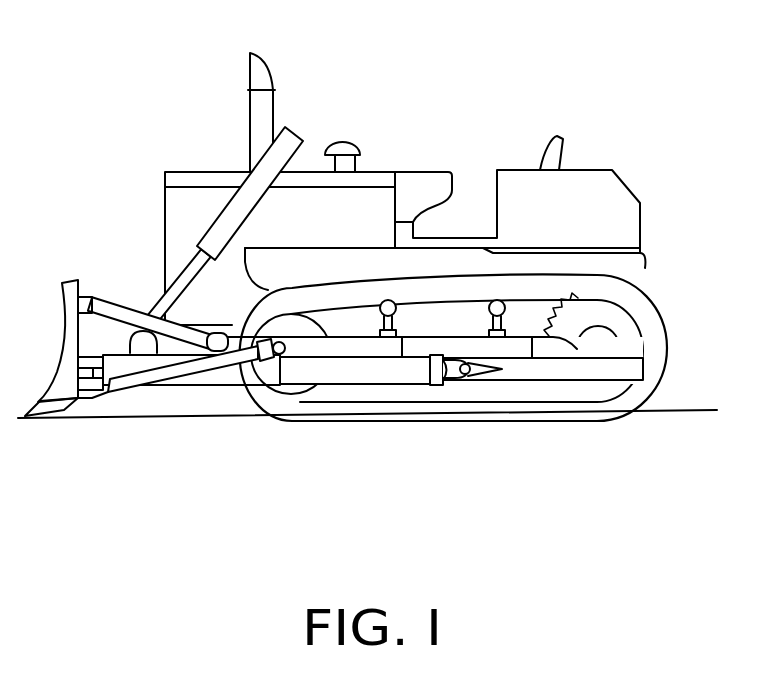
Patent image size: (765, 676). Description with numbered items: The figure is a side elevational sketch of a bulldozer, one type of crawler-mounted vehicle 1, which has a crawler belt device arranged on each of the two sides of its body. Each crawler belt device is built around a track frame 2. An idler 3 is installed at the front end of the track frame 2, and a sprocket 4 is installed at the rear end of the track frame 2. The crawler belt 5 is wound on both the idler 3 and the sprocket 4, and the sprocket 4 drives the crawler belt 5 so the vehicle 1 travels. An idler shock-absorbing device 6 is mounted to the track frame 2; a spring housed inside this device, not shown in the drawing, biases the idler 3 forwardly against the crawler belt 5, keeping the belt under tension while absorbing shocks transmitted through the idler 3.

The vehicle 1 is at (374, 253).
The track frame 2 is at (553, 370).
The idler 3 is at (293, 338).
The sprocket 4 is at (578, 315).
The crawler belt 5 is at (655, 347).
The idler shock-absorbing device 6 is at (302, 413).